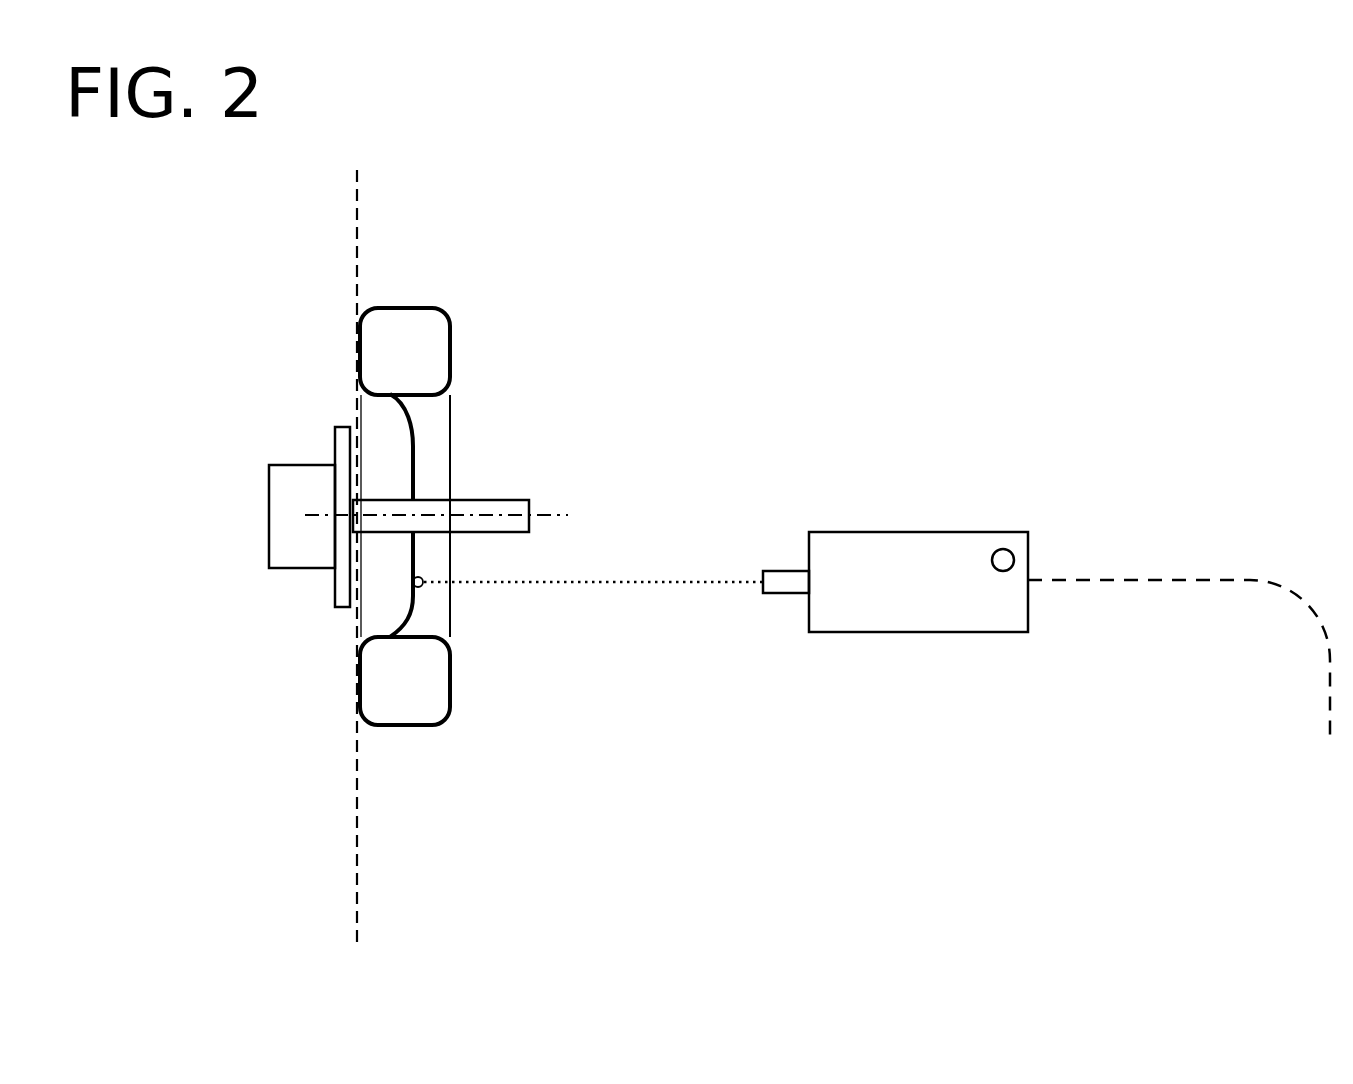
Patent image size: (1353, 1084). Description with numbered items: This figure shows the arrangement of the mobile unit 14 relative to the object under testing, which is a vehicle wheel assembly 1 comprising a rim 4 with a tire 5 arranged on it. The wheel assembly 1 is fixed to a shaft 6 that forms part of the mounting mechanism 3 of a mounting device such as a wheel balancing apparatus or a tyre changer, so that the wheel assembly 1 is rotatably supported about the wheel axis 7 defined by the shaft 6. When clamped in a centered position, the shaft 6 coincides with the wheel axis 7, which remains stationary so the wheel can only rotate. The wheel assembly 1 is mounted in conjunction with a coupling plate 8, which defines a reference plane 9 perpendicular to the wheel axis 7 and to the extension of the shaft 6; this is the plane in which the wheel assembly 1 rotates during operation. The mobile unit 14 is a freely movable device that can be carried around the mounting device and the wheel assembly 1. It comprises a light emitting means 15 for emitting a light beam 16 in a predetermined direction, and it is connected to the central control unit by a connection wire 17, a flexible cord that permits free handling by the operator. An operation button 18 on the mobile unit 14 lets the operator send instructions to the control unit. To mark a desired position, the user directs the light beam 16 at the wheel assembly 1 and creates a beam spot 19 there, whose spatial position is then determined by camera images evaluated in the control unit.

The wheel assembly 1 is at (429, 539).
The mounting mechanism 3 is at (280, 454).
The rim 4 is at (413, 426).
The tire 5 is at (450, 337).
The shaft 6 is at (505, 500).
The wheel axis 7 is at (550, 510).
The coupling plate 8 is at (339, 426).
The reference plane 9 is at (357, 222).
The mobile unit 14 is at (910, 633).
The light emitting means 15 is at (780, 575).
The light beam 16 is at (682, 580).
The connection wire 17 is at (1193, 580).
The operation button 18 is at (1003, 560).
The beam spot 19 is at (423, 581).